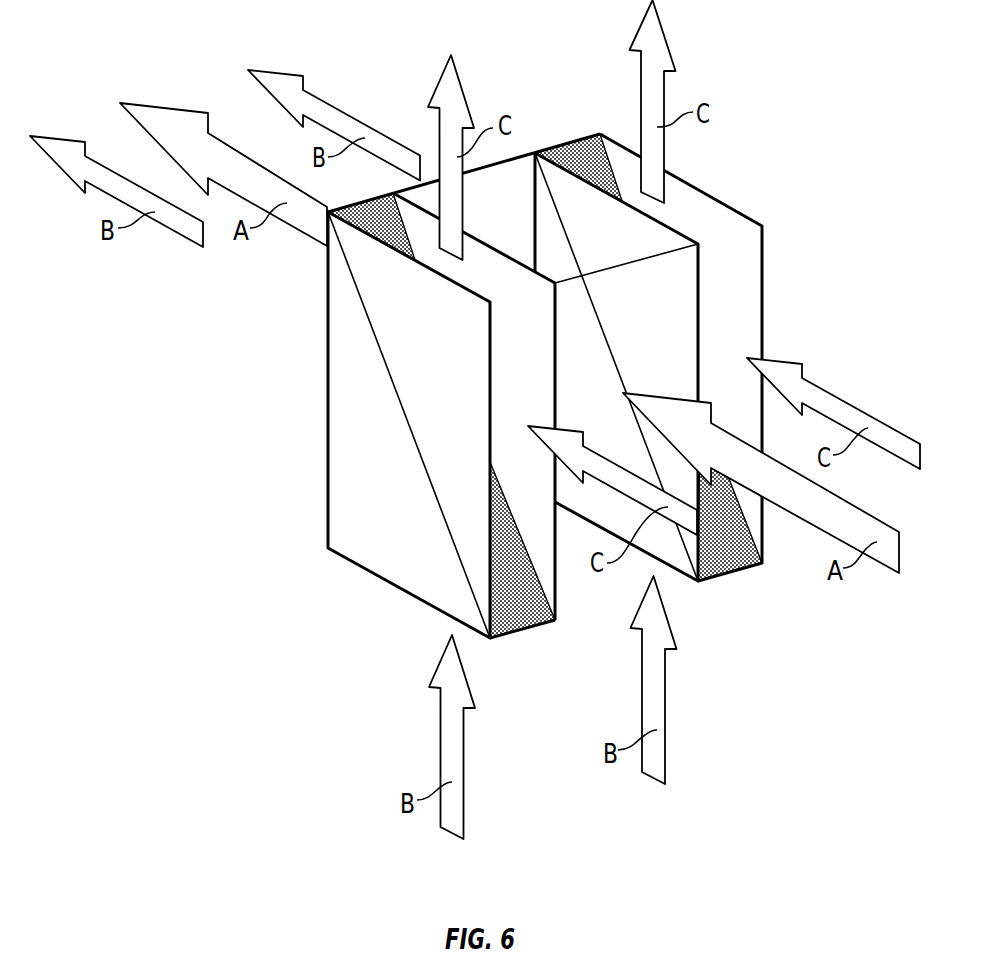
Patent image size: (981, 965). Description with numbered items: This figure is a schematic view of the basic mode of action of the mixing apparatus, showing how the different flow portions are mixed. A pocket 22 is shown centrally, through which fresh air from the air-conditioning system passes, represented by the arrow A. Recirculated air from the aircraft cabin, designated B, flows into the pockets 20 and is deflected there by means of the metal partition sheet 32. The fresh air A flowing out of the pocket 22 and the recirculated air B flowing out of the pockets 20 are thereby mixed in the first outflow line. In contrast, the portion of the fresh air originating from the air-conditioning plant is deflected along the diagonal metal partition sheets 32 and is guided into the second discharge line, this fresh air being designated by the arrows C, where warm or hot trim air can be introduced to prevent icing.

The pocket 20 is at (367, 550).
The pocket 22 is at (480, 202).
The metal partition sheet 32 is at (402, 407).